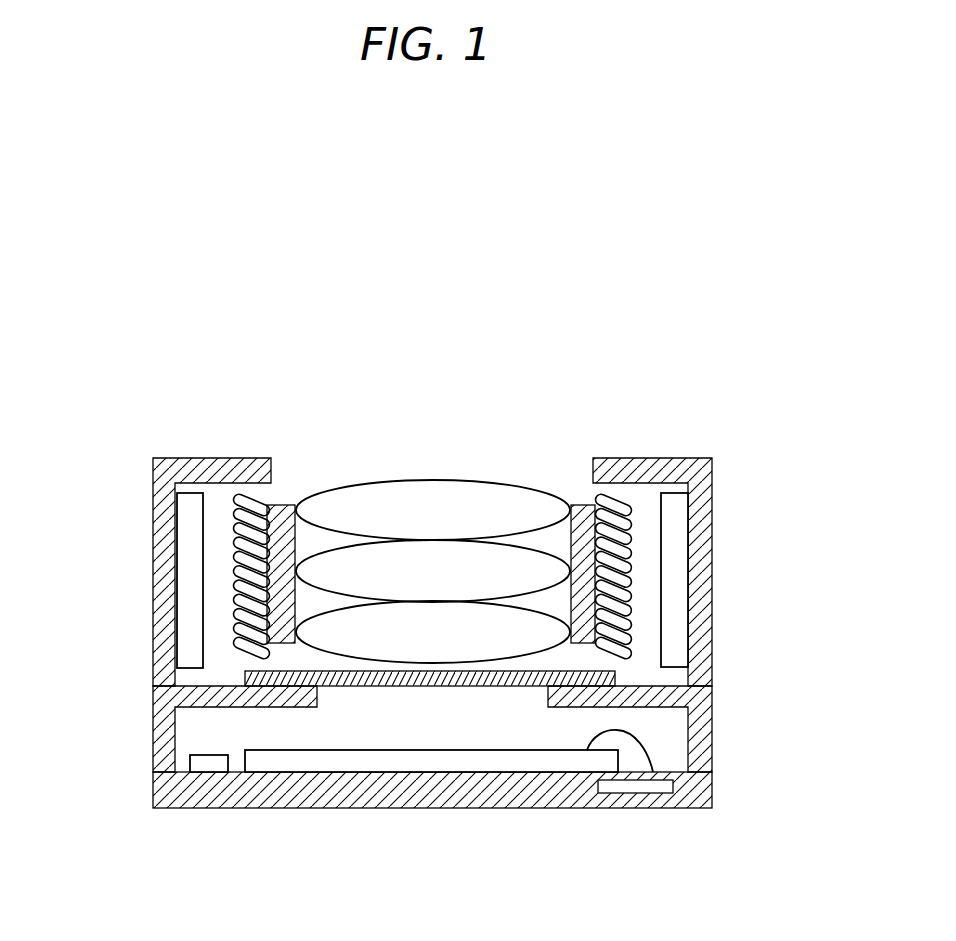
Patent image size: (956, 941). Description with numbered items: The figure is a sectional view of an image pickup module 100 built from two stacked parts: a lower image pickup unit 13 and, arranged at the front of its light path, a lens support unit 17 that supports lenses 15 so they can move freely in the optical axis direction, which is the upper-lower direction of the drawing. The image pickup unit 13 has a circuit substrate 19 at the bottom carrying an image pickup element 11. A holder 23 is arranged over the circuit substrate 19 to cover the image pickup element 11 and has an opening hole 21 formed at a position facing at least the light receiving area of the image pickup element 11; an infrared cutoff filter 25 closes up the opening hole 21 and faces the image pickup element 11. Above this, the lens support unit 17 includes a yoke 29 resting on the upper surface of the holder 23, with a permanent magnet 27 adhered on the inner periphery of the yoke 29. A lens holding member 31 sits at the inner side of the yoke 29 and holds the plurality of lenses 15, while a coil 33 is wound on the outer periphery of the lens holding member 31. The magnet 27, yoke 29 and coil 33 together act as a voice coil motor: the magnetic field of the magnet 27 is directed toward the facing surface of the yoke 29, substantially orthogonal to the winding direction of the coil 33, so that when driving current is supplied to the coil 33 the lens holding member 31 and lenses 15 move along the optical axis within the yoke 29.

The image pickup module 100 is at (671, 333).
The image pickup element 11 is at (305, 749).
The image pickup unit 13 is at (742, 723).
The lenses 15 is at (487, 485).
The lens support unit 17 is at (742, 550).
The circuit substrate 19 is at (463, 797).
The opening hole 21 is at (548, 690).
The holder 23 is at (160, 723).
The infrared cutoff filter 25 is at (433, 688).
The magnet 27 is at (185, 623).
The yoke 29 is at (163, 537).
The lens holding member 31 is at (283, 520).
The coil 33 is at (240, 514).